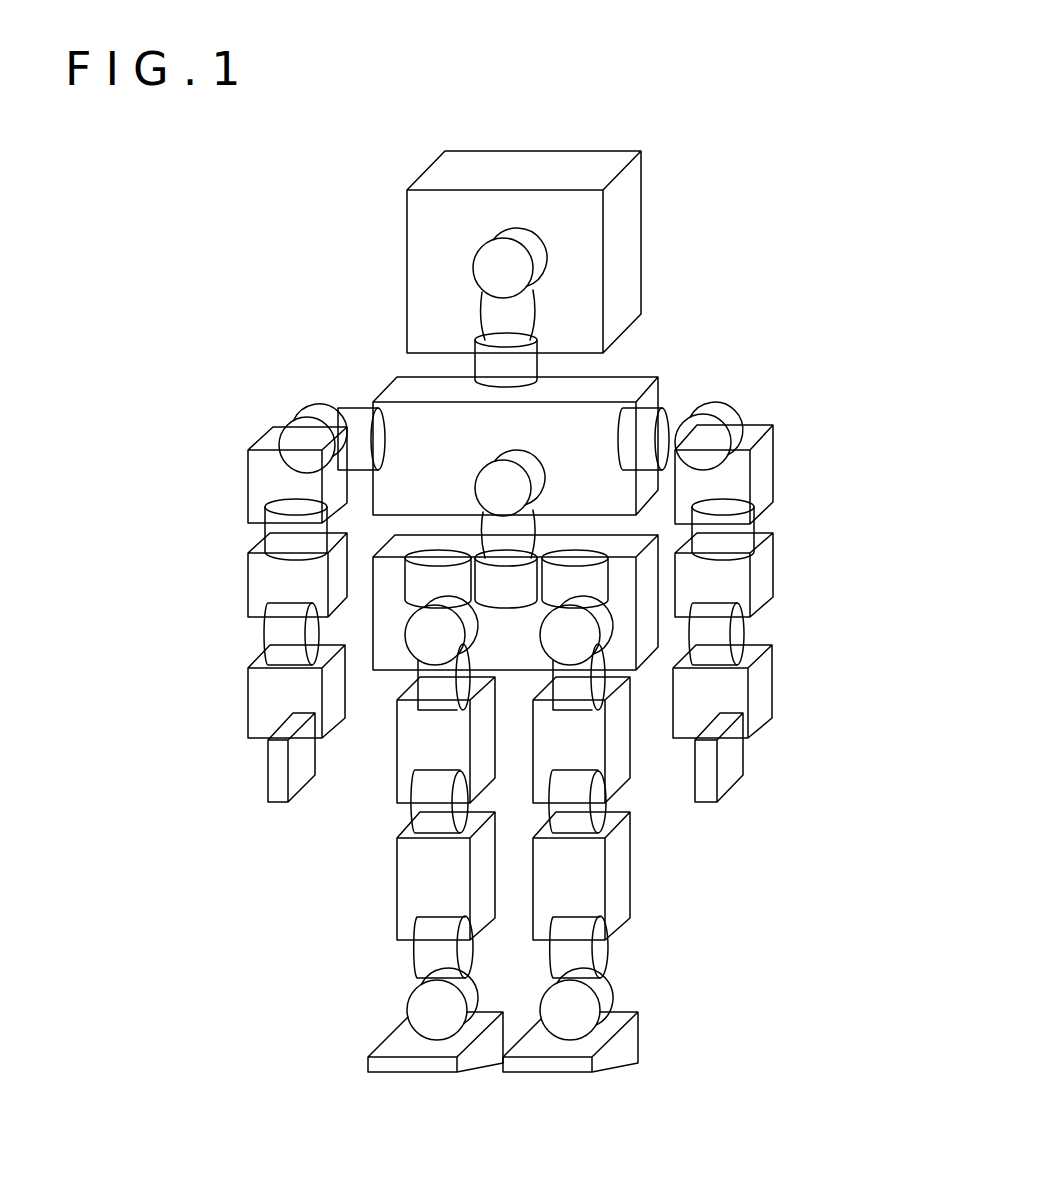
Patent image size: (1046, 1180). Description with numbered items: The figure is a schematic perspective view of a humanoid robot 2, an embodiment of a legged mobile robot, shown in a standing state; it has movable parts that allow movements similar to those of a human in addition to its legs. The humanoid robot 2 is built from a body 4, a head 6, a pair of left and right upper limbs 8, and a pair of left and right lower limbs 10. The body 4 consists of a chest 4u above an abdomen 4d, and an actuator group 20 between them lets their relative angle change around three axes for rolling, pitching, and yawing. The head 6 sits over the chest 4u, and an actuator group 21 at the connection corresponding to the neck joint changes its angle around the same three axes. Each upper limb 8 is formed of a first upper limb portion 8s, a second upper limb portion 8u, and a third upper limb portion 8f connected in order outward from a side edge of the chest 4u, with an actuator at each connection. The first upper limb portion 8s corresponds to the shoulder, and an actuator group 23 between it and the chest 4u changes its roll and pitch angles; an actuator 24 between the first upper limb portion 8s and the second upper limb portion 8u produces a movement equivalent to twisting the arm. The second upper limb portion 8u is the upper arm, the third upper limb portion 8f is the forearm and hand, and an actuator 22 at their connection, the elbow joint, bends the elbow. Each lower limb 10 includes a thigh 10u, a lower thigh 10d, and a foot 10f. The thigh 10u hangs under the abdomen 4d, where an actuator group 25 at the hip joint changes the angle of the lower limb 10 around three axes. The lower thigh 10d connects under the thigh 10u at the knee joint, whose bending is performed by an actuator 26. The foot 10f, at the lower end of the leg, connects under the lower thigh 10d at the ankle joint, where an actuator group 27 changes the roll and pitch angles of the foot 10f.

The humanoid robot 2 is at (313, 173).
The body 4 is at (655, 363).
The chest 4u is at (398, 395).
The abdomen 4d is at (385, 660).
The head 6 is at (623, 220).
The upper limb 8 is at (233, 423).
The first upper limb portion 8s is at (263, 478).
The second upper limb portion 8u is at (262, 583).
The third upper limb portion 8f is at (262, 702).
The lower limb 10 is at (303, 874).
The thigh 10u is at (415, 755).
The lower thigh 10d is at (415, 878).
The foot 10f is at (378, 1062).
The actuator group 20 is at (553, 465).
The actuator group 21 is at (470, 250).
The actuator 22 is at (272, 632).
The actuator group 23 is at (290, 397).
The actuator 24 is at (277, 533).
The actuator group 25 is at (393, 573).
The actuator 26 is at (423, 793).
The actuator group 27 is at (397, 960).